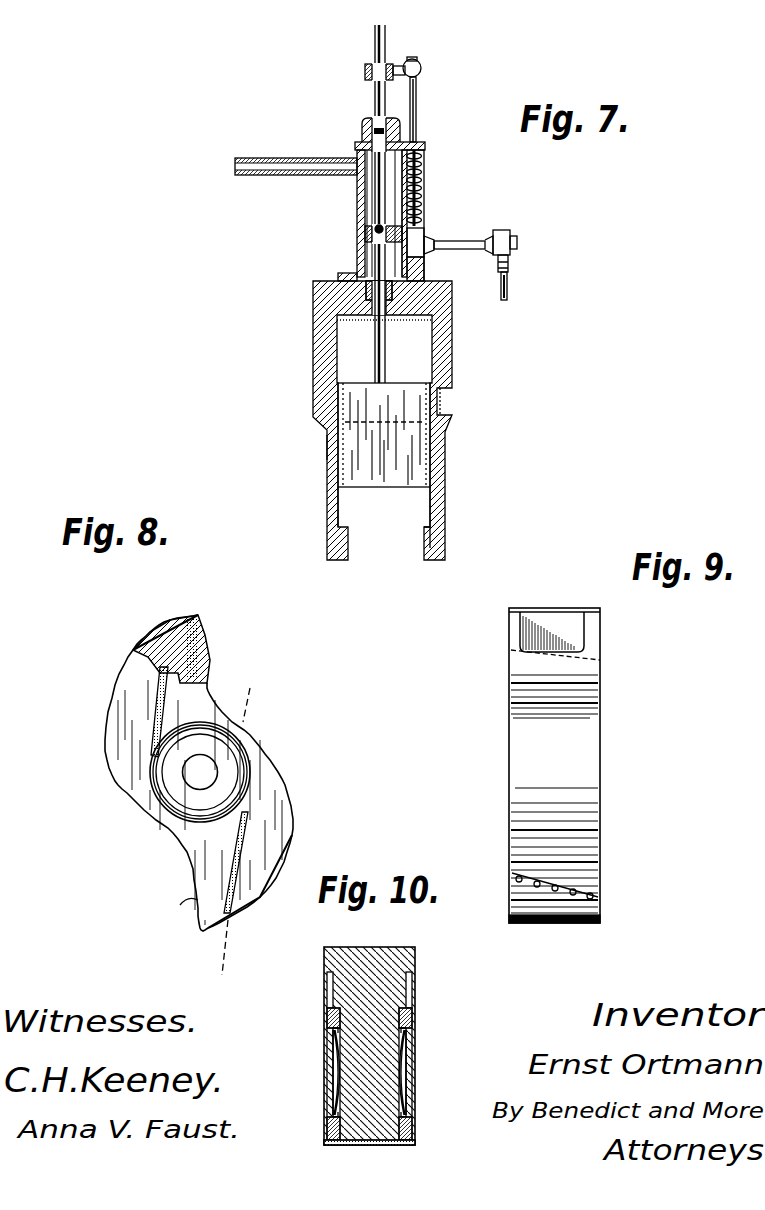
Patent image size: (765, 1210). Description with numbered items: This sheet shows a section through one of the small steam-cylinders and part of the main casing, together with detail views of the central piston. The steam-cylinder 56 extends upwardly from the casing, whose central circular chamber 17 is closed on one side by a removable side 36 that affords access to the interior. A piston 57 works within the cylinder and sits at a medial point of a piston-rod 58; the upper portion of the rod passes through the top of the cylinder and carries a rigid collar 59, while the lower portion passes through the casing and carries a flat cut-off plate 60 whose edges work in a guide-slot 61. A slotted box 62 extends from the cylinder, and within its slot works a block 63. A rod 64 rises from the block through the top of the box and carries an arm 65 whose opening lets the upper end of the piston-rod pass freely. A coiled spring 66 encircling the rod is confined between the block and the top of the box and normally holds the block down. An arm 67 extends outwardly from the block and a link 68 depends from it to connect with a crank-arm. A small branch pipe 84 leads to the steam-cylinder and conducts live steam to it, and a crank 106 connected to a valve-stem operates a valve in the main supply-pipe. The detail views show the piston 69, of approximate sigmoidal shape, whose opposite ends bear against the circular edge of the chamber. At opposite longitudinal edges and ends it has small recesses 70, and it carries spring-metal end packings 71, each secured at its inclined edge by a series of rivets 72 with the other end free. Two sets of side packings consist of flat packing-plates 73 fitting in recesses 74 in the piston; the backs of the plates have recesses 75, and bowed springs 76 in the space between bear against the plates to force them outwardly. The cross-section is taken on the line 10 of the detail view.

In FIG. 7, the central circular chamber 17 is at (395, 530).
In FIG. 7, the removable side of casing 36 is at (445, 536).
In FIG. 7, the steam-cylinder 56 is at (357, 220).
In FIG. 7, the piston 57 is at (372, 238).
In FIG. 7, the piston-rod 58 is at (392, 347).
In FIG. 7, the rigid collar 59 is at (366, 75).
In FIG. 7, the flat cut-off plate 60 is at (393, 478).
In FIG. 7, the guide-slot 61 is at (338, 503).
In FIG. 7, the slotted box 62 is at (426, 144).
In FIG. 7, the block 63 is at (424, 232).
In FIG. 7, the rod 64 is at (417, 118).
In FIG. 7, the arm 65 is at (421, 68).
In FIG. 7, the coiled spring 66 is at (422, 172).
In FIG. 7, the arm 67 is at (463, 240).
In FIG. 7, the link 68 is at (508, 280).
In FIG. 7, the branch pipe 84 is at (275, 153).
In FIG. 7, the crank 106 is at (327, 450).
In FIG. 8, the piston 69 is at (117, 772).
In FIG. 9, the piston 69 is at (590, 744).
In FIG. 10, the piston 69 is at (417, 975).
In FIG. 8, the small recess 70 is at (195, 647).
In FIG. 9, the small recess 70 is at (557, 622).
In FIG. 8, the end packing 71 is at (177, 618).
In FIG. 9, the end packing 71 is at (545, 925).
In FIG. 10, the end packing 71 is at (370, 1143).
In FIG. 9, the rivet 72 is at (580, 888).
In FIG. 8, the packing-plate 73 is at (162, 700).
In FIG. 10, the packing-plate 73 is at (416, 1024).
In FIG. 10, the recess 74 is at (330, 1112).
In FIG. 10, the recess 75 is at (333, 1082).
In FIG. 10, the bowed spring 76 is at (335, 1054).
In FIG. 8, the section line 10 is at (237, 832).